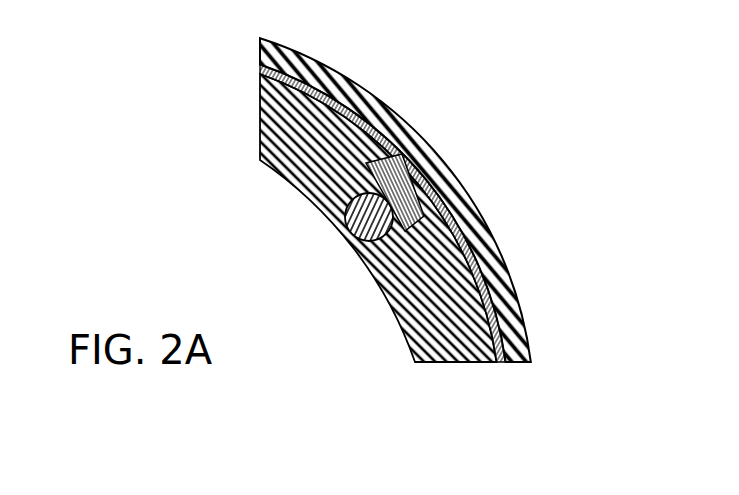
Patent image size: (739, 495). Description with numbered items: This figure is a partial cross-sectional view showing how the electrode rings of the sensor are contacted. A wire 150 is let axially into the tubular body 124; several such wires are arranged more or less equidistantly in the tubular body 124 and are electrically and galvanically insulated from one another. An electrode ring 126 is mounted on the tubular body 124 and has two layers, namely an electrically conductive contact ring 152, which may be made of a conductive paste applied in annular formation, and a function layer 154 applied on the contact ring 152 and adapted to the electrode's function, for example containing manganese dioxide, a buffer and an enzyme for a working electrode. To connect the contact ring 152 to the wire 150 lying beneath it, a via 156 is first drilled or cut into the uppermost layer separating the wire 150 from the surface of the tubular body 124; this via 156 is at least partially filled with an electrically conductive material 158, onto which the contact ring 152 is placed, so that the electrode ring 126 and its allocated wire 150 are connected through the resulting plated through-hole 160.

The tubular body 124 is at (497, 377).
The electrode ring 126 is at (384, 233).
The wire 150 is at (352, 229).
The contact ring 152 is at (502, 364).
The function layer 154 is at (537, 356).
The via 156 is at (366, 163).
The electrically conductive material 158 is at (263, 186).
The plated through-hole 160 is at (290, 186).